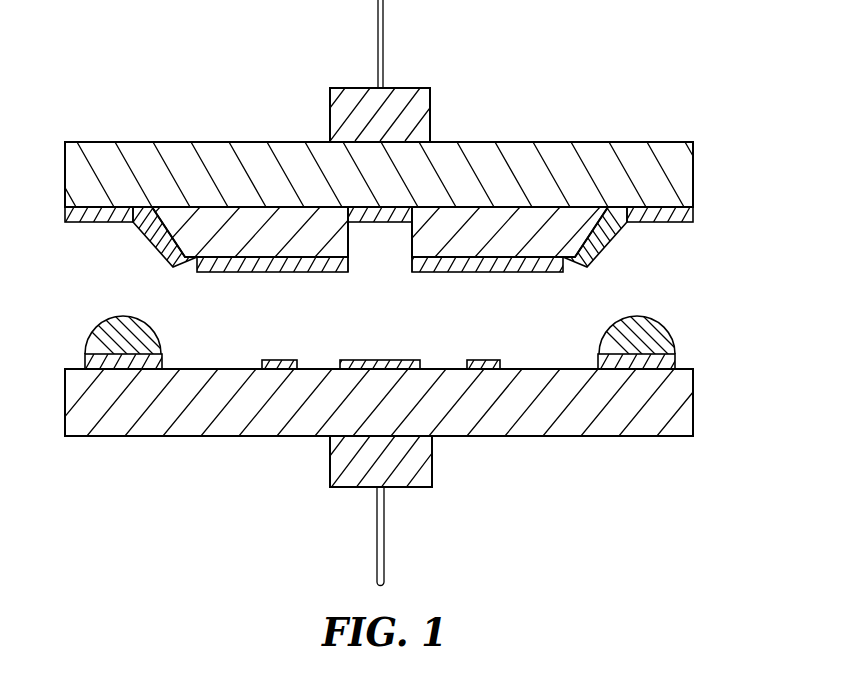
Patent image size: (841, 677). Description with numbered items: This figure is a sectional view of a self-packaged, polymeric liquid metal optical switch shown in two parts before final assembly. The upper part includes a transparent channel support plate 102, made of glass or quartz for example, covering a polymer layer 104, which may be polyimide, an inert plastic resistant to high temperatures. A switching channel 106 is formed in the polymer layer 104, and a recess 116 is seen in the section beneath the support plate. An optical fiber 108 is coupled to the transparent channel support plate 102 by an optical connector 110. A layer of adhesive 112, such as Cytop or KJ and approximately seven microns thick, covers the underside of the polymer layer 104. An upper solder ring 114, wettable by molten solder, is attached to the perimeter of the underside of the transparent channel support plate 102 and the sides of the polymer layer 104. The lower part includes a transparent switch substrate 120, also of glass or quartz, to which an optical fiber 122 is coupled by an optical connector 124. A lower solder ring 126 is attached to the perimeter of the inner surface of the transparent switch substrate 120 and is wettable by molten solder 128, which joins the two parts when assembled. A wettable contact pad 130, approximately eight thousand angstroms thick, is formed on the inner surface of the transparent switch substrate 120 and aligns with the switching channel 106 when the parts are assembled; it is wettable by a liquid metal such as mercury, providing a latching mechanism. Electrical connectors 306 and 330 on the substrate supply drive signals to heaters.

The transparent channel support plate 102 is at (482, 142).
The polymer layer 104 is at (167, 220).
The switching channel 106 is at (378, 282).
The optical fiber 108 is at (383, 50).
The optical connector 110 is at (430, 112).
The layer of adhesive 112 is at (257, 275).
The upper solder ring 114 is at (78, 222).
The recess 116 is at (395, 223).
The transparent switch substrate 120 is at (695, 400).
The optical fiber 122 is at (385, 535).
The optical connector 124 is at (432, 472).
The lower solder ring 126 is at (163, 362).
The molten solder 128 is at (123, 315).
The wettable contact pad 130 is at (387, 360).
The electrical connector 306 is at (283, 360).
The electrical connector 330 is at (482, 360).